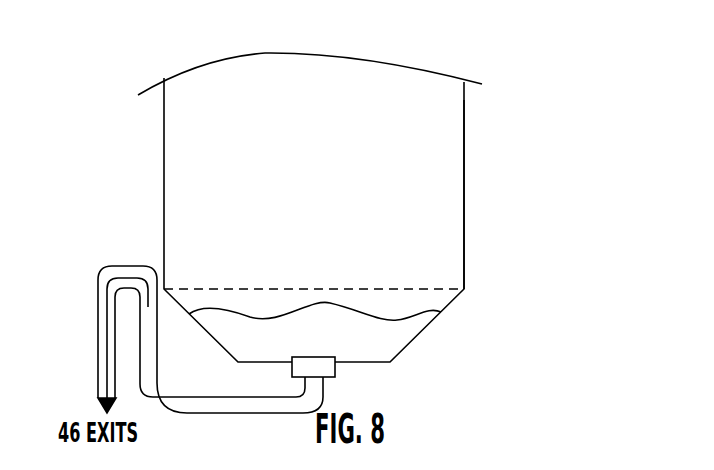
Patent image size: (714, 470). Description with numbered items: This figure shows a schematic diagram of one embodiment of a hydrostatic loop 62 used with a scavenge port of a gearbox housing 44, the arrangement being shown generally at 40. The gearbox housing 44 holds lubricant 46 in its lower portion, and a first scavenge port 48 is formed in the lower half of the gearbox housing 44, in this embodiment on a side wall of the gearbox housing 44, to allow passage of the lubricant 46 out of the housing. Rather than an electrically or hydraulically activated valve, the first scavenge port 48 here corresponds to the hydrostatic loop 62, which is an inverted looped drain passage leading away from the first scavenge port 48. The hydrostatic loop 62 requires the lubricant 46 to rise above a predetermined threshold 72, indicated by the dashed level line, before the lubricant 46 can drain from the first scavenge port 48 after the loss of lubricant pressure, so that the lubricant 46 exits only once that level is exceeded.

The container 40 is at (466, 111).
The gearbox housing 44 is at (464, 180).
The lubricant 46 is at (316, 342).
The first scavenge port 48 is at (336, 370).
The hydrostatic loop 62 is at (116, 253).
The predetermined threshold 72 is at (295, 289).